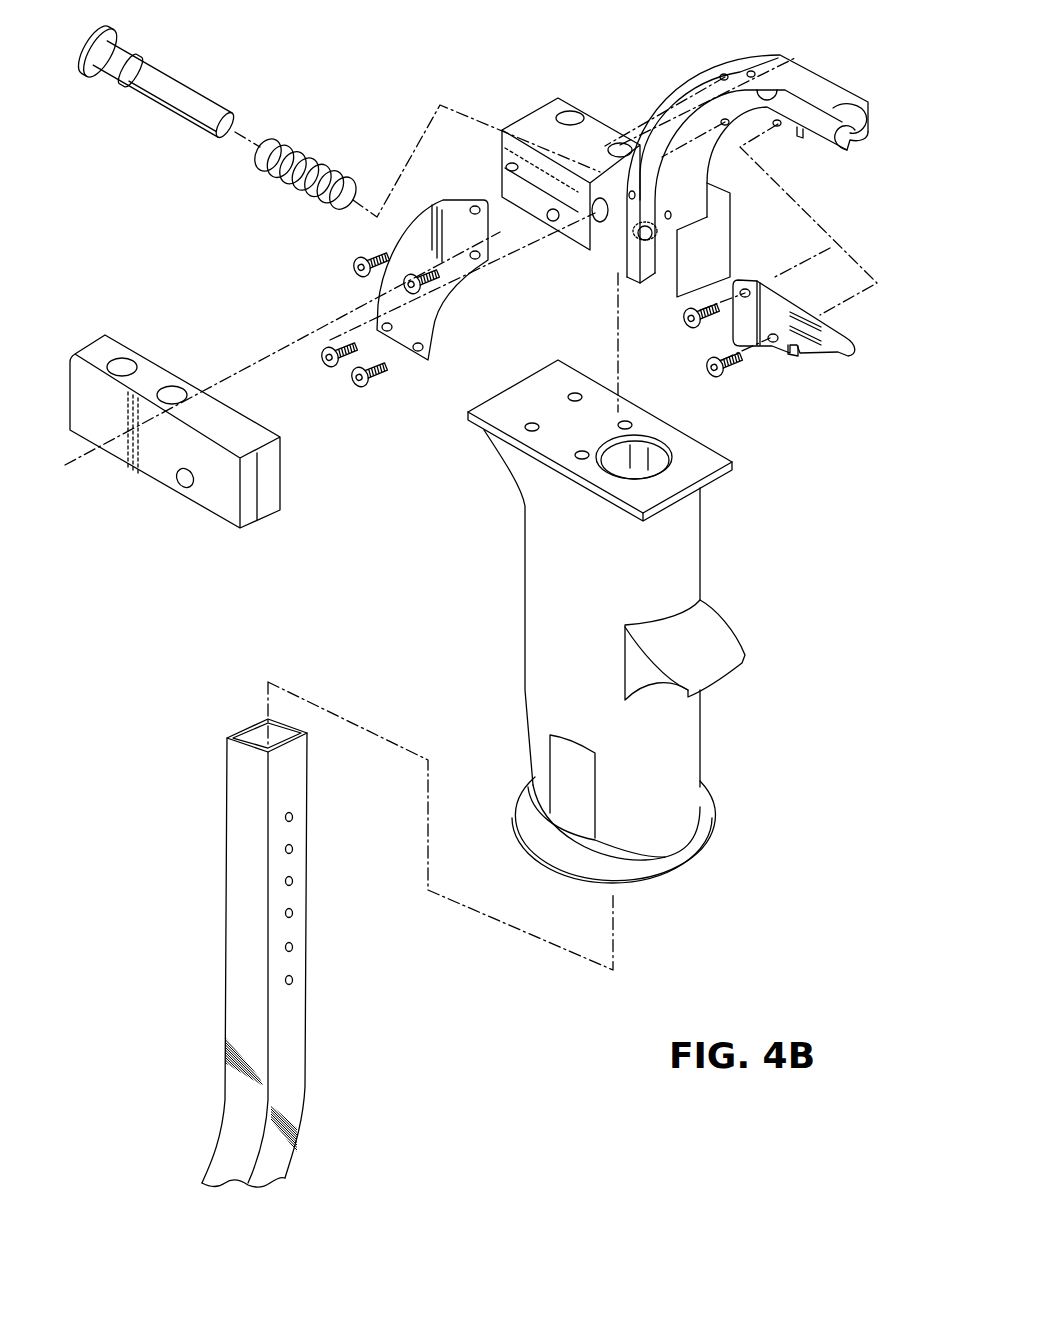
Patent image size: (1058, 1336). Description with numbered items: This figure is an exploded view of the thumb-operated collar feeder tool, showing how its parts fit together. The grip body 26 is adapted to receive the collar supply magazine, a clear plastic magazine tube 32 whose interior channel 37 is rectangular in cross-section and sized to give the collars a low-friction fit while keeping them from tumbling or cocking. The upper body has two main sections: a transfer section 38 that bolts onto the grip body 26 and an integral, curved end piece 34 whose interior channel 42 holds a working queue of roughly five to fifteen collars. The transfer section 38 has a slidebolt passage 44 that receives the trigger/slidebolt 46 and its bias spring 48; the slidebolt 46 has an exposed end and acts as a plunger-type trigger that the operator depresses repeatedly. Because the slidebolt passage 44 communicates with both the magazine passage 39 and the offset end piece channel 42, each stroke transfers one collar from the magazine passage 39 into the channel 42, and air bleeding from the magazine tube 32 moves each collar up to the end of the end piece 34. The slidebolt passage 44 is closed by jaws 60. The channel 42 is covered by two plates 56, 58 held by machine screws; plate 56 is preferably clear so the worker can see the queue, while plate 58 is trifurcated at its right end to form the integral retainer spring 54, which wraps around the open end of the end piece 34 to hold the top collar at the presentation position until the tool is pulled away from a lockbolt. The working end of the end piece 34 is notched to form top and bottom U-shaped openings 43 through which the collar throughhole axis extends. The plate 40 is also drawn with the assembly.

The grip body 26 is at (675, 557).
The magazine tube 32 is at (250, 828).
The curved end piece 34 is at (690, 77).
The interior channel 37 is at (262, 735).
The transfer section 38 is at (537, 120).
The magazine passage 39 is at (640, 452).
The plate 40 is at (698, 455).
The interior channel 42 is at (780, 92).
The U-shaped opening 43 is at (850, 143).
The slidebolt passage 44 is at (507, 164).
The trigger/slidebolt 46 is at (205, 105).
The bias spring 48 is at (321, 165).
The retainer spring 54 is at (848, 338).
The plate 56 is at (425, 310).
The plate 58 is at (783, 348).
The jaws 60 is at (270, 487).